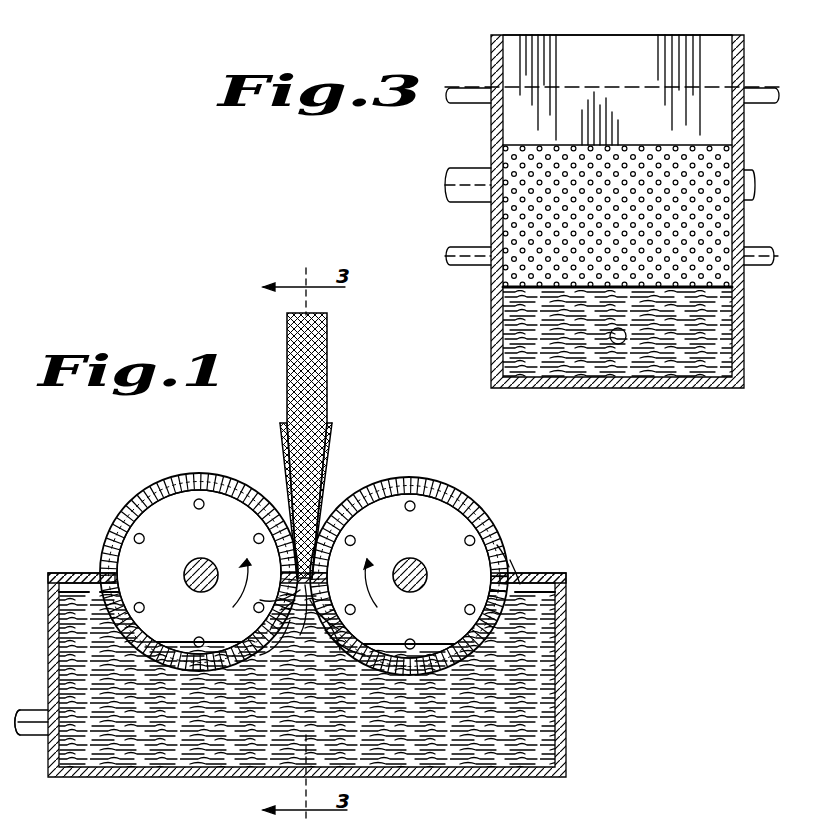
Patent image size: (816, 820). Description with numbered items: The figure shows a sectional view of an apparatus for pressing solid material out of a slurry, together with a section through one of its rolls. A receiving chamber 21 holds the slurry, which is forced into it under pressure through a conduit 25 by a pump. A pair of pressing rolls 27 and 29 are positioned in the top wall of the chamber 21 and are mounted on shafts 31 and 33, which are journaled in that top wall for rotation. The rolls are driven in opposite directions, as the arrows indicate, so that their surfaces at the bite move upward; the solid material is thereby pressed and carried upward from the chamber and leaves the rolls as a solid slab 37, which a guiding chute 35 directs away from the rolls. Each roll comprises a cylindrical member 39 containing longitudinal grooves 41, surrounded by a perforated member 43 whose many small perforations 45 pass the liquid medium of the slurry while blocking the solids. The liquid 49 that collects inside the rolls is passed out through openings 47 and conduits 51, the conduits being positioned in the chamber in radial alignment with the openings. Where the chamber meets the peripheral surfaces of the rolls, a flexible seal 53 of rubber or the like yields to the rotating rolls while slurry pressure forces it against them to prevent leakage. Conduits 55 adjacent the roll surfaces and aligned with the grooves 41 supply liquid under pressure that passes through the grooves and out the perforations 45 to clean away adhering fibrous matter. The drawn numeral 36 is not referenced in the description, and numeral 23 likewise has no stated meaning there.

In FIG. 1, the receiving chamber 21 is at (567, 674).
In FIG. 1, the treating liquid 23 is at (558, 721).
In FIG. 1, the conduit 25 is at (46, 737).
In FIG. 1, the pressing roll 27 is at (422, 566).
In FIG. 1, the pressing roll 29 is at (199, 578).
In FIG. 1, the shaft 31 is at (427, 574).
In FIG. 1, the shaft 33 is at (212, 560).
In FIG. 1, the guiding chute 35 is at (332, 454).
In FIG. 3, the guiding chute 35 is at (504, 61).
In FIG. 3, the container wall 36 is at (491, 115).
In FIG. 1, the solid slab 37 is at (327, 389).
In FIG. 1, the cylindrical member 39 is at (438, 479).
In FIG. 1, the longitudinal grooves 41 is at (418, 479).
In FIG. 1, the perforated member 43 is at (463, 501).
In FIG. 1, the perforations 45 is at (513, 549).
In FIG. 3, the perforations 45 is at (538, 182).
In FIG. 1, the openings 47 is at (254, 539).
In FIG. 1, the liquid 49 is at (423, 641).
In FIG. 3, the conduits 51 is at (474, 265).
In FIG. 1, the seal 53 is at (82, 575).
In FIG. 3, the conduits 55 is at (461, 107).